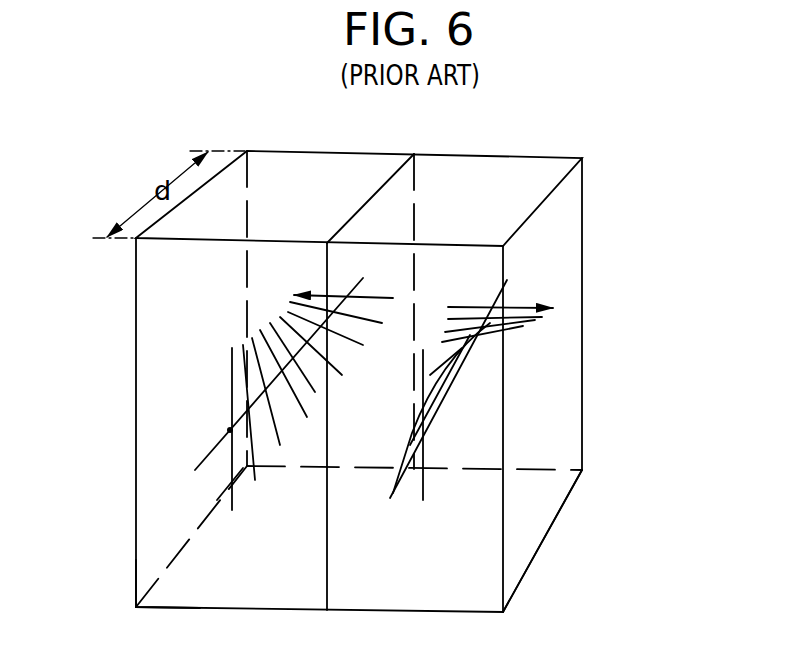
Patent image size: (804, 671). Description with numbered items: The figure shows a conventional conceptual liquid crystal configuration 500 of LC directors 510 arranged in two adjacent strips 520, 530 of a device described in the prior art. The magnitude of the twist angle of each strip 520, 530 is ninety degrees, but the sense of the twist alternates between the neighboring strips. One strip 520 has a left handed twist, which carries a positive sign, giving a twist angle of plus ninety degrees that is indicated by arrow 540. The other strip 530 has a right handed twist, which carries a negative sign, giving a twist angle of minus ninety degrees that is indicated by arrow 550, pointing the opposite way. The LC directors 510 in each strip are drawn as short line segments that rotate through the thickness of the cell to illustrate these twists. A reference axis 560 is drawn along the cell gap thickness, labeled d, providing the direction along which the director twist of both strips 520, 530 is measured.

The liquid crystal configuration 500 is at (518, 607).
The LC directors 510 is at (278, 442).
The strip 520 is at (156, 545).
The strip 530 is at (535, 518).
The arrow 540 is at (321, 296).
The arrow 550 is at (520, 307).
The reference axis 560 is at (207, 453).